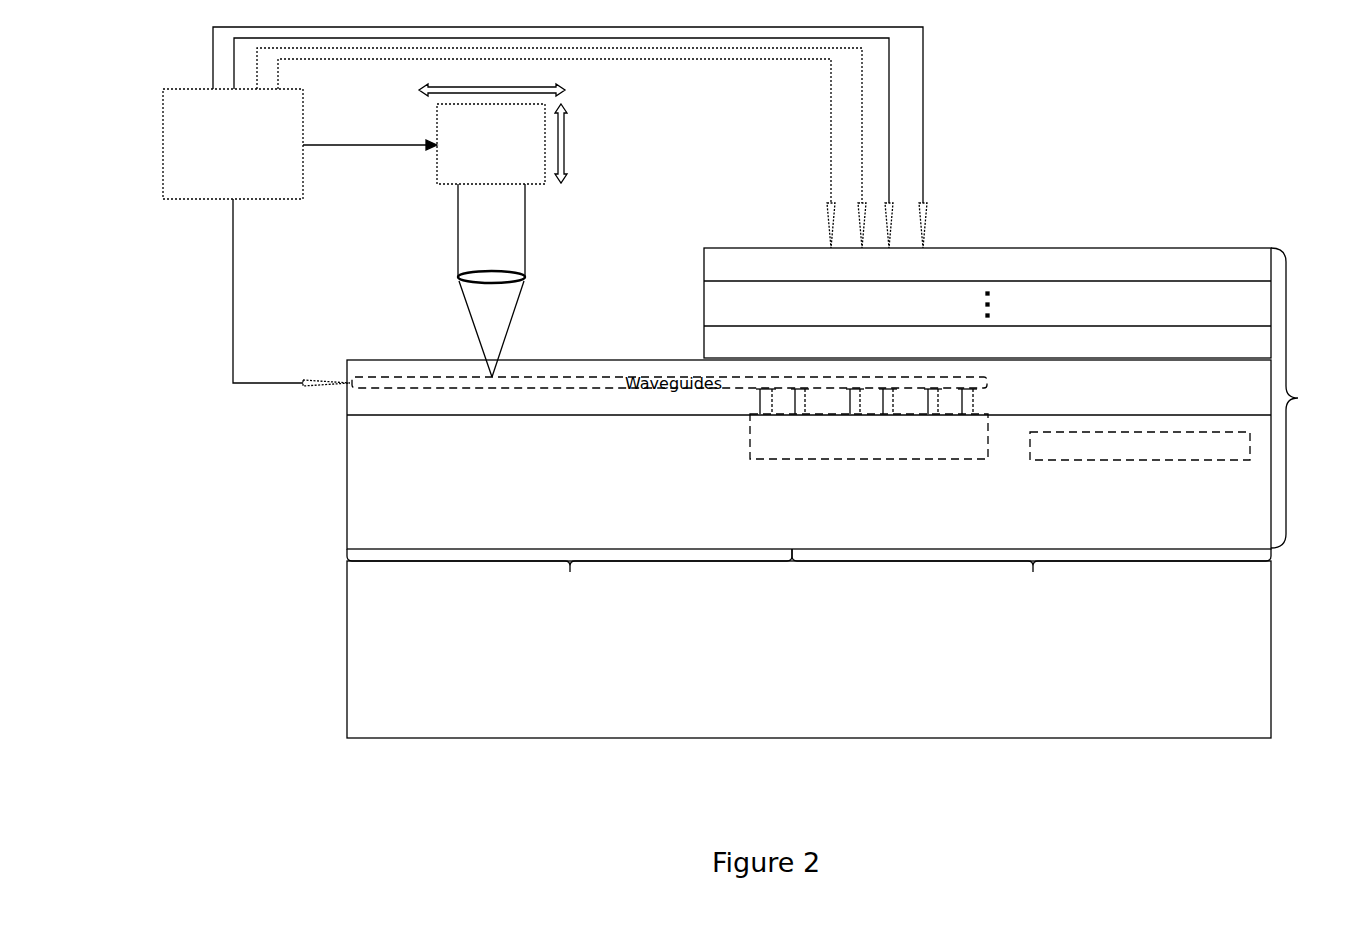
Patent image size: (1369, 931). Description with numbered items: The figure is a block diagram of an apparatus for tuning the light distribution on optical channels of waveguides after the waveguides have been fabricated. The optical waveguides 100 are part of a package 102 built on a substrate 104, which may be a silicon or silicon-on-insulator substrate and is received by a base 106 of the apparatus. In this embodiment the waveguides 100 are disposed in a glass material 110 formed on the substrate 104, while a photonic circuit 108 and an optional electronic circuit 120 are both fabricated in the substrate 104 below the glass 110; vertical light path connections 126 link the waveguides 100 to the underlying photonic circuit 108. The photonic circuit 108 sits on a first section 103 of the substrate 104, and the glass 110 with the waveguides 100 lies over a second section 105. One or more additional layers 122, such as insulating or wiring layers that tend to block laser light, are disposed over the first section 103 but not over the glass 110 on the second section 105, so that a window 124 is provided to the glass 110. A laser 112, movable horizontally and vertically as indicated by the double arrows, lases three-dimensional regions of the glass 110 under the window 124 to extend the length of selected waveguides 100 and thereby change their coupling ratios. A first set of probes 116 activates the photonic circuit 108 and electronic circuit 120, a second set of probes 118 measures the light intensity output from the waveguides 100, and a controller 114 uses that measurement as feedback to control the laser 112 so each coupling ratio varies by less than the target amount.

The optical waveguides 100 is at (652, 378).
The package 102 is at (1298, 398).
The first section of the substrate 103 is at (1031, 575).
The substrate 104 is at (867, 491).
The second section of the substrate 105 is at (569, 575).
The base 106 is at (887, 653).
The photonic circuit 108 is at (947, 447).
The glass 110 is at (370, 400).
The laser 112 is at (528, 154).
The controller 114 is at (218, 168).
The first set of probes 116 is at (955, 224).
The second set of probes 118 is at (318, 360).
The electronic circuit 120 is at (1222, 456).
The additional layers 122 is at (1002, 274).
The window 124 is at (584, 292).
The vertical light path connections 126 is at (996, 400).